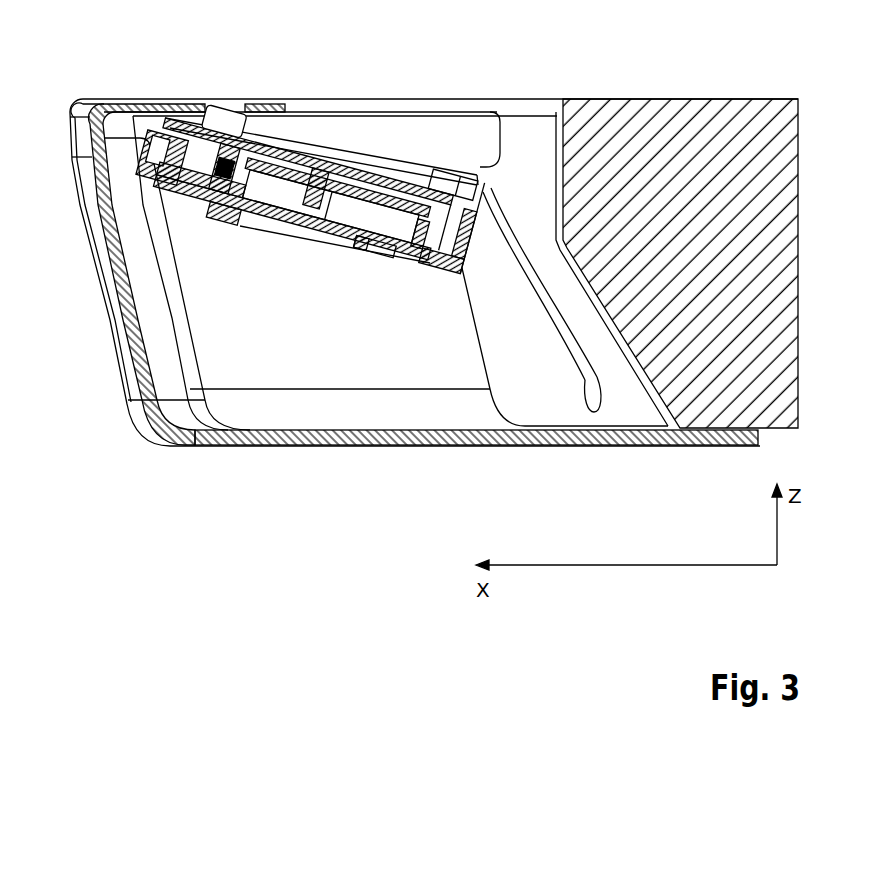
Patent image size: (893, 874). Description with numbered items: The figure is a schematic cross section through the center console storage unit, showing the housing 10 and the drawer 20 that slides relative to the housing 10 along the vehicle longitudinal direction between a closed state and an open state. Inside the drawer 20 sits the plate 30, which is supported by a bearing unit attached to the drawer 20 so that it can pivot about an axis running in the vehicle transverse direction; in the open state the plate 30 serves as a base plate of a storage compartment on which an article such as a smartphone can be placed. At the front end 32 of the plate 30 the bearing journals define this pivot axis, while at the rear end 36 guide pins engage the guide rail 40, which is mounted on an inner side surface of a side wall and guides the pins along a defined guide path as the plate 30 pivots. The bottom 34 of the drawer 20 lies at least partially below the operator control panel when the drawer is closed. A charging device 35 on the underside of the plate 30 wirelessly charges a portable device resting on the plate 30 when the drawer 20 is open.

The housing 10 is at (535, 133).
The drawer 20 is at (126, 350).
The plate 30 is at (375, 148).
The front end 32 is at (217, 103).
The bottom 34 is at (218, 446).
The charging device 35 is at (104, 140).
The end 36 is at (483, 163).
The guide rail 40 is at (600, 373).